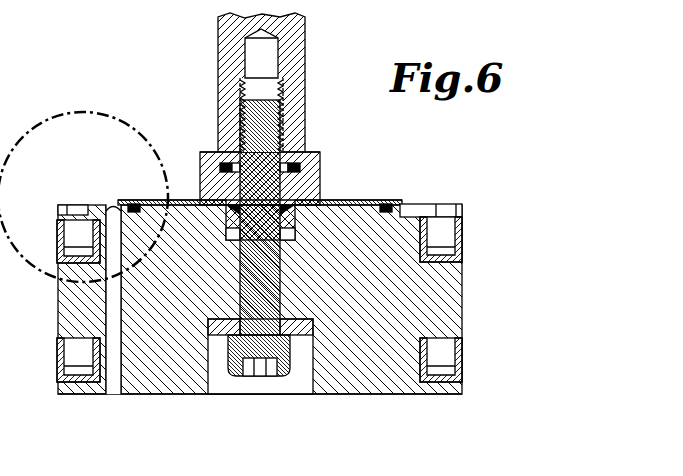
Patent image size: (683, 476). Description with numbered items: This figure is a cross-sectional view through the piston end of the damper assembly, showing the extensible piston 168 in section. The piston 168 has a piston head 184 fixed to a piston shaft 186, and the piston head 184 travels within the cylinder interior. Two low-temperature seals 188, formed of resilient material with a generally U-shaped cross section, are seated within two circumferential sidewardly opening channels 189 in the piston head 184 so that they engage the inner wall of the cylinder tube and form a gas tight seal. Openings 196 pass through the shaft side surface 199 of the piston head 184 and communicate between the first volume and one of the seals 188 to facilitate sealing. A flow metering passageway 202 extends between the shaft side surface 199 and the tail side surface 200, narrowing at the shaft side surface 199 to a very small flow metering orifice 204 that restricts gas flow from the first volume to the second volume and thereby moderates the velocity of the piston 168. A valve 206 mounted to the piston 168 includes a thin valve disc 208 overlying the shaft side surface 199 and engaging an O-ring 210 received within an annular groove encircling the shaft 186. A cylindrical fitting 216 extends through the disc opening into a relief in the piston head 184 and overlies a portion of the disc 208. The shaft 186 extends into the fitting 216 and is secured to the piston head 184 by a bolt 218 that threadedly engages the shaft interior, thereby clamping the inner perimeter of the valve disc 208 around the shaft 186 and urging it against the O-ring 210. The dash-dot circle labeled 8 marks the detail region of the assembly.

The detail circle 8 is at (84, 192).
The extensible piston 168 is at (343, 32).
The piston head 184 is at (462, 295).
The piston shaft 186 is at (305, 85).
The low-temperature seals 188 is at (462, 228).
The circumferential sidewardly opening channels 189 is at (455, 247).
The openings 196 is at (75, 206).
The shaft side surface 199 is at (428, 203).
The tail side surface 200 is at (373, 402).
The flow metering passageway 202 is at (119, 385).
The flow metering orifice 204 is at (112, 200).
The valve 206 is at (370, 138).
The valve disc 208 is at (381, 202).
The O-ring 210 is at (134, 204).
The cylindrical fitting 216 is at (322, 160).
The bolt 218 is at (237, 377).